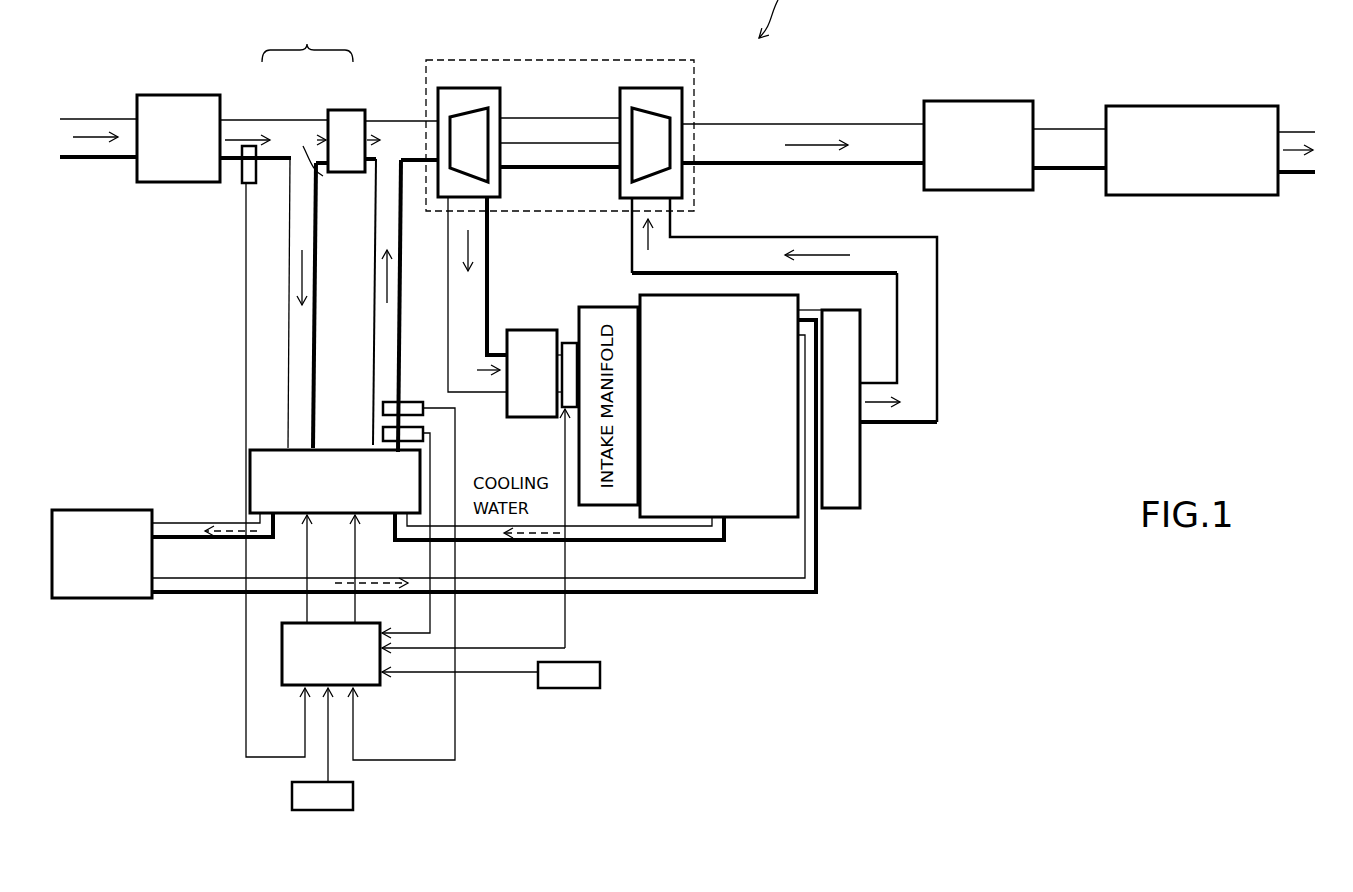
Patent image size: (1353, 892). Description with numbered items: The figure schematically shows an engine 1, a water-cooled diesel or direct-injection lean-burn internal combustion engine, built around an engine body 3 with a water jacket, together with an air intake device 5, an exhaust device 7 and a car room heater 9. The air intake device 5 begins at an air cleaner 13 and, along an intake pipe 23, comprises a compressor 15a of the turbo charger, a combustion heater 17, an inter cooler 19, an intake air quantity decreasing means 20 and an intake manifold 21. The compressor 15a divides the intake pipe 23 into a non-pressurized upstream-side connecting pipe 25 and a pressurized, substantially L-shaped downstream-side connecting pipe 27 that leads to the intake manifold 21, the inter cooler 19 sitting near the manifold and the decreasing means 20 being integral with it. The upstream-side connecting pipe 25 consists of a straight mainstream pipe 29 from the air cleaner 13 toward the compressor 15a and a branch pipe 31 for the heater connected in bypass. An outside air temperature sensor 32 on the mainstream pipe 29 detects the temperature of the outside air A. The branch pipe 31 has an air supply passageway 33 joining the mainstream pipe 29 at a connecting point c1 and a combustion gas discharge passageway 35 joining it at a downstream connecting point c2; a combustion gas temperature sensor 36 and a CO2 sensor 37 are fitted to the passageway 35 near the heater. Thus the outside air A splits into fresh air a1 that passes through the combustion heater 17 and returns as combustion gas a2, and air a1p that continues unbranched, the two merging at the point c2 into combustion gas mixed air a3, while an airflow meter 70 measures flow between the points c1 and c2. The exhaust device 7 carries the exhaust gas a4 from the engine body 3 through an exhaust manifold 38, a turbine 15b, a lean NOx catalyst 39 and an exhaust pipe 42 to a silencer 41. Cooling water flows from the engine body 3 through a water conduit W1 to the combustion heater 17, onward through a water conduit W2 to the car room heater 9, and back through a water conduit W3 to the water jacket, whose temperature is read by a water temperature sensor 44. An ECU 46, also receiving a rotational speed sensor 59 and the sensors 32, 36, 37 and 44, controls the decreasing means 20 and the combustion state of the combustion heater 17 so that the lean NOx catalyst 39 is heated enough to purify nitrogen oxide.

The engine 1 is at (788, 517).
The engine body 3 is at (755, 517).
The air intake device 5 is at (173, 262).
The exhaust device 7 is at (895, 103).
The car room heater 9 is at (96, 598).
The air cleaner 13 is at (173, 95).
The compressor 15a is at (463, 88).
The turbine 15b is at (636, 88).
The combustion heater 17 is at (250, 450).
The inter cooler 19 is at (536, 330).
The intake air quantity decreasing means 20 is at (573, 343).
The intake manifold 21 is at (585, 430).
The intake pipe 23 is at (402, 121).
The upstream-side connecting pipe 25 is at (307, 41).
The downstream-side connecting pipe 27 is at (480, 227).
The mainstream pipe 29 is at (312, 126).
The branch pipe for heater 31 is at (292, 170).
The outside air temperature sensor 32 is at (245, 184).
The air supply passageway 33 is at (300, 235).
The combustion gas discharge passageway 35 is at (381, 222).
The combustion gas temperature sensor 36 is at (415, 402).
The CO2 sensor 37 is at (385, 433).
The exhaust manifold 38 is at (858, 480).
The lean NOx catalyst 39 is at (984, 101).
The silencer 41 is at (1193, 106).
The exhaust pipe 42 is at (938, 296).
The water temperature sensor 44 is at (346, 798).
The ECU 46 is at (367, 672).
The rotational speed sensor 59 is at (563, 690).
The airflow meter 70 is at (345, 110).
The water conduit W1 is at (692, 540).
The water conduit W2 is at (168, 523).
The water conduit W3 is at (186, 587).
The outside air A is at (96, 142).
The fresh air a1 is at (300, 287).
The air a1' a1p is at (380, 138).
The combustion gas a2 is at (387, 276).
The combustion gas mixed air a3 is at (476, 258).
The exhaust gas a4 is at (812, 148).
The connecting point c1 is at (335, 191).
The connecting point c2 is at (393, 161).